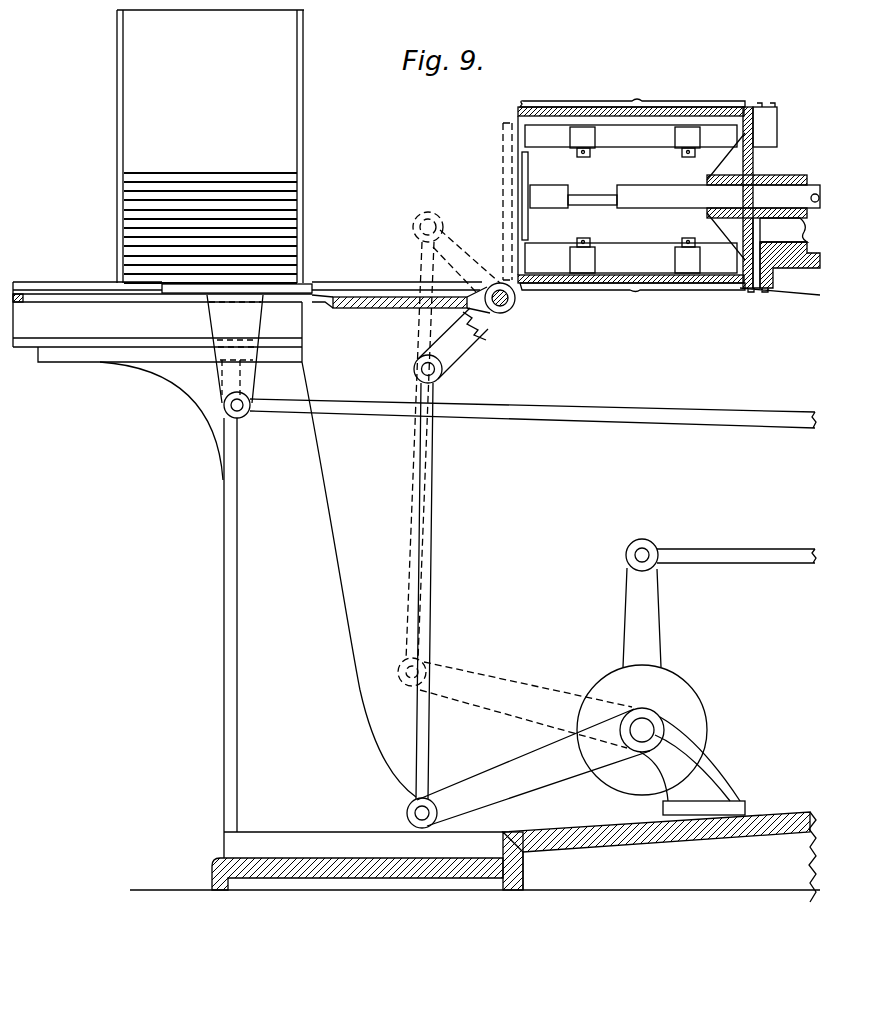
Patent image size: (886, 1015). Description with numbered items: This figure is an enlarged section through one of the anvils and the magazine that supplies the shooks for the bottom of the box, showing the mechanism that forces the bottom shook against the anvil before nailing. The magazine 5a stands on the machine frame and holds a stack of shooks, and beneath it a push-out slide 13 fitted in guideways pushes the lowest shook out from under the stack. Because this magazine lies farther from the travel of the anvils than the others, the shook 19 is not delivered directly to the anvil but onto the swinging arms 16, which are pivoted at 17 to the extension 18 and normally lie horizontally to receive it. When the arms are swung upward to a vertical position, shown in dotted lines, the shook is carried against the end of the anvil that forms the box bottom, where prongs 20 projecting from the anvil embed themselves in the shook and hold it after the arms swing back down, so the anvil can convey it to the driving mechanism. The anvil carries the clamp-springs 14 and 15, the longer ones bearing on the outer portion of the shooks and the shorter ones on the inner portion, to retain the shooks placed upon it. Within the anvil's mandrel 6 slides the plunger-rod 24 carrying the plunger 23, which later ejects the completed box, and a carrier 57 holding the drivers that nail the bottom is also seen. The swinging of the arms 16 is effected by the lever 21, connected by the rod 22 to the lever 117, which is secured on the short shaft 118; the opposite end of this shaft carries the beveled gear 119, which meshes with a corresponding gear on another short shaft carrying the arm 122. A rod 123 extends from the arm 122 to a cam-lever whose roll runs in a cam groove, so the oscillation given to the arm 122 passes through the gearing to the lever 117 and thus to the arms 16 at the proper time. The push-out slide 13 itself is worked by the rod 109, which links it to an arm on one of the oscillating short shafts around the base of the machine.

The magazine 5a is at (224, 146).
The push-out slide 13 is at (191, 292).
The shook 19 is at (343, 283).
The extension 18 is at (348, 309).
The swinging arms 16 is at (392, 303).
The pivot 17 is at (504, 306).
The lever 21 is at (467, 352).
The prongs 20 is at (518, 132).
The rod 22 is at (433, 503).
The rod 109 is at (611, 421).
The clamp-springs 14 is at (606, 104).
The clamp-springs 15 is at (711, 103).
The plunger 23 is at (530, 165).
The plunger-rod 24 is at (592, 194).
The mandrel 6 is at (664, 202).
The carrier 57 is at (800, 177).
The rod 123 is at (721, 546).
The arm 122 is at (655, 618).
The beveled gear 119 is at (678, 685).
The short shaft 118 is at (648, 724).
The lever 117 is at (488, 772).